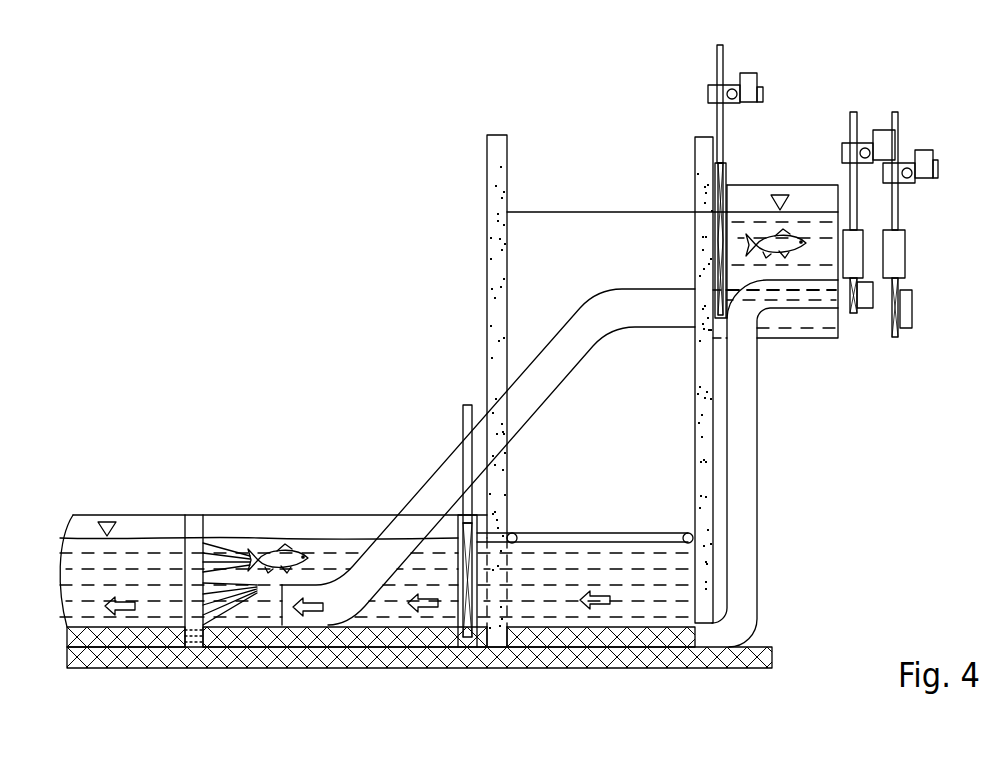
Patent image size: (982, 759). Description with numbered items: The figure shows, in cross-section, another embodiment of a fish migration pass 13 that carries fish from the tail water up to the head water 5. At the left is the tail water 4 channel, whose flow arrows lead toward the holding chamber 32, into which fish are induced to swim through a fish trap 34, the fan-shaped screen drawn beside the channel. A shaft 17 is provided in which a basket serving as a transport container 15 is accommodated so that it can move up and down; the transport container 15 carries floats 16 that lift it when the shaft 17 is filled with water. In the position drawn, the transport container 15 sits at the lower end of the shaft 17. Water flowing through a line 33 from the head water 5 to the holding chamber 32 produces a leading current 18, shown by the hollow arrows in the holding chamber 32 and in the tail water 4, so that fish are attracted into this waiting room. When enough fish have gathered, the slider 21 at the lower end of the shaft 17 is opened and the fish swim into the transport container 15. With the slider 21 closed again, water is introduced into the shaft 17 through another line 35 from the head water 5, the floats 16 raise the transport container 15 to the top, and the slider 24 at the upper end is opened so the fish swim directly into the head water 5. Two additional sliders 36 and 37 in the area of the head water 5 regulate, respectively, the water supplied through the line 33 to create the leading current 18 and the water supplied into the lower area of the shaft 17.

The downstream channel / fish pass channel 4 is at (148, 528).
The head water 5 is at (813, 215).
The fish migration pass 13 is at (785, 473).
The transport container 15 is at (665, 595).
The floats 16 is at (663, 537).
The shaft 17 is at (490, 237).
The leading current 18 is at (430, 610).
The slider 21 is at (462, 553).
The slider 24 is at (716, 273).
The holding chamber 32 is at (262, 533).
The line 33 is at (447, 491).
The fish trap 34 is at (223, 583).
The line 35 is at (760, 452).
The slider 36 is at (853, 313).
The slider 37 is at (898, 337).